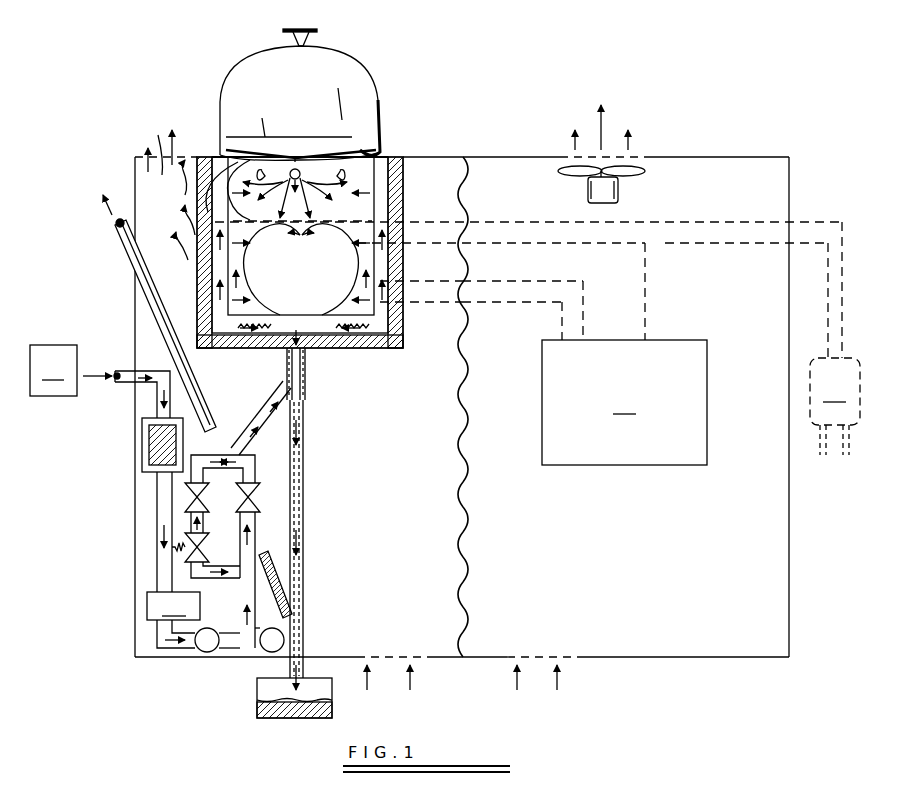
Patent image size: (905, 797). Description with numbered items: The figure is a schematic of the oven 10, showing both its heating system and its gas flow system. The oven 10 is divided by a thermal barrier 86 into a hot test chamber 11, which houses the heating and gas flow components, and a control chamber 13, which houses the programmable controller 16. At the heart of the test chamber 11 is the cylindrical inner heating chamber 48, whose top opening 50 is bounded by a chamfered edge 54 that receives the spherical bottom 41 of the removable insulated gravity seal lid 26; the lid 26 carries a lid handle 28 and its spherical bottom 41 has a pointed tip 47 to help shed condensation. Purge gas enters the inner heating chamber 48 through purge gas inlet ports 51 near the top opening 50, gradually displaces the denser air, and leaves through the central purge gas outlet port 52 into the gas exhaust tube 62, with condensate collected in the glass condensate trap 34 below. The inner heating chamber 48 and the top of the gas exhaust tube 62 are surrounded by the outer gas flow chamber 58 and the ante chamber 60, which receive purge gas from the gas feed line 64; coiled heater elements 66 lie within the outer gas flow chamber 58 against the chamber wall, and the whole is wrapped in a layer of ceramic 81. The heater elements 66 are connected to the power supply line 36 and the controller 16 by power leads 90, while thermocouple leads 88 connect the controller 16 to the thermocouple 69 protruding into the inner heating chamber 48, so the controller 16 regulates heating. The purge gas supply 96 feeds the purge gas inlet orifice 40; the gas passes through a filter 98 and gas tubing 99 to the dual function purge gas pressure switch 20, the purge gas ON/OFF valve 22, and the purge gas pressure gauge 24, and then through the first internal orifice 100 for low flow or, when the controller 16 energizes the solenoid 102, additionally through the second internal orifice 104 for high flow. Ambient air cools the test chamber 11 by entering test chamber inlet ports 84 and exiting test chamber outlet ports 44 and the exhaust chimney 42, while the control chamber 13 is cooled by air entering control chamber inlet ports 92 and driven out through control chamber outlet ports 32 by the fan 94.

The oven 10 is at (674, 127).
The test chamber 11 is at (394, 557).
The control chamber 13 is at (648, 573).
The programmable controller 16 is at (624, 402).
The dual function purge gas pressure switch 20 is at (173, 620).
The purge gas ON/OFF valve 22 is at (208, 627).
The purge gas pressure gauge 24 is at (272, 628).
The gravity seal lid 26 is at (377, 88).
The lid handle 28 is at (318, 31).
The control chamber outlet ports 32 is at (563, 158).
The condensate trap 34 is at (256, 694).
The power supply line 36 is at (835, 406).
The purge gas inlet orifice 40 is at (117, 370).
The spherical bottom 41 is at (367, 150).
The exhaust chimney 42 is at (124, 254).
The test chamber outlet ports 44 is at (167, 175).
The pointed tip 47 is at (297, 164).
The inner heating chamber 48 is at (235, 210).
The top opening 50 is at (368, 157).
The purge gas inlet ports 51 is at (282, 152).
The purge gas outlet port 52 is at (297, 313).
The chamfered edge 54 is at (240, 160).
The outer gas flow chamber 58 is at (402, 190).
The ante chamber 60 is at (306, 378).
The gas exhaust tube 62 is at (305, 460).
The gas feed line 64 is at (262, 411).
The heater elements 66 is at (236, 348).
The thermocouple 69 is at (380, 300).
The ceramic layer 81 is at (404, 328).
The test chamber inlet ports 84 is at (426, 660).
The thermal barrier 86 is at (466, 549).
The thermocouple leads 88 is at (519, 304).
The power leads 90 is at (728, 222).
The control chamber inlet ports 92 is at (571, 660).
The fan 94 is at (640, 171).
The purge gas supply 96 is at (71, 370).
The filter 98 is at (141, 448).
The gas tubing 99 is at (157, 546).
The first internal orifice 100 is at (250, 498).
The solenoid 102 is at (196, 548).
The second internal orifice 104 is at (196, 500).